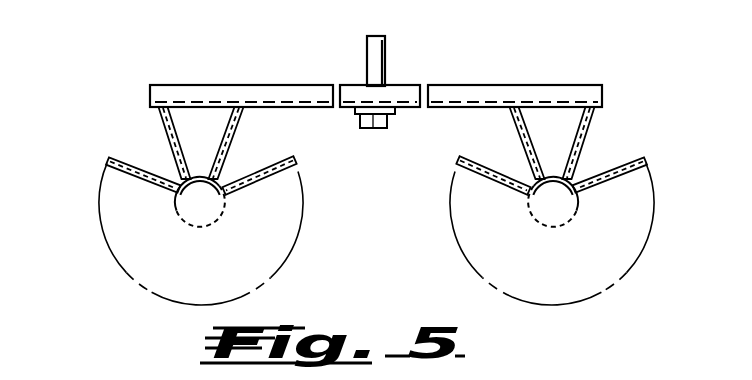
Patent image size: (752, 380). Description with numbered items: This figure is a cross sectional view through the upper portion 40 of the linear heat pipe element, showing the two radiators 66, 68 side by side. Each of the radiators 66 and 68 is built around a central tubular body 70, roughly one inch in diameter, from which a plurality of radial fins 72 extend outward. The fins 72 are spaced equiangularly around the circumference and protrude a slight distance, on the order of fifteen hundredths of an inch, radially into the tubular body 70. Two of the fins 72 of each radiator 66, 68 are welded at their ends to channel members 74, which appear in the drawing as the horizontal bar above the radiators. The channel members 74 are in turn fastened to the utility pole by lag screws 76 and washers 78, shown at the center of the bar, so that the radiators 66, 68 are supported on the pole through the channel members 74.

The upper portion 40 is at (381, 232).
The radiator 66 is at (98, 208).
The radiator 68 is at (637, 265).
The central tubular body 70 is at (181, 217).
The radial fins 72 is at (260, 182).
The channel members 74 is at (605, 96).
The lag screws 76 is at (387, 118).
The washers 78 is at (357, 113).